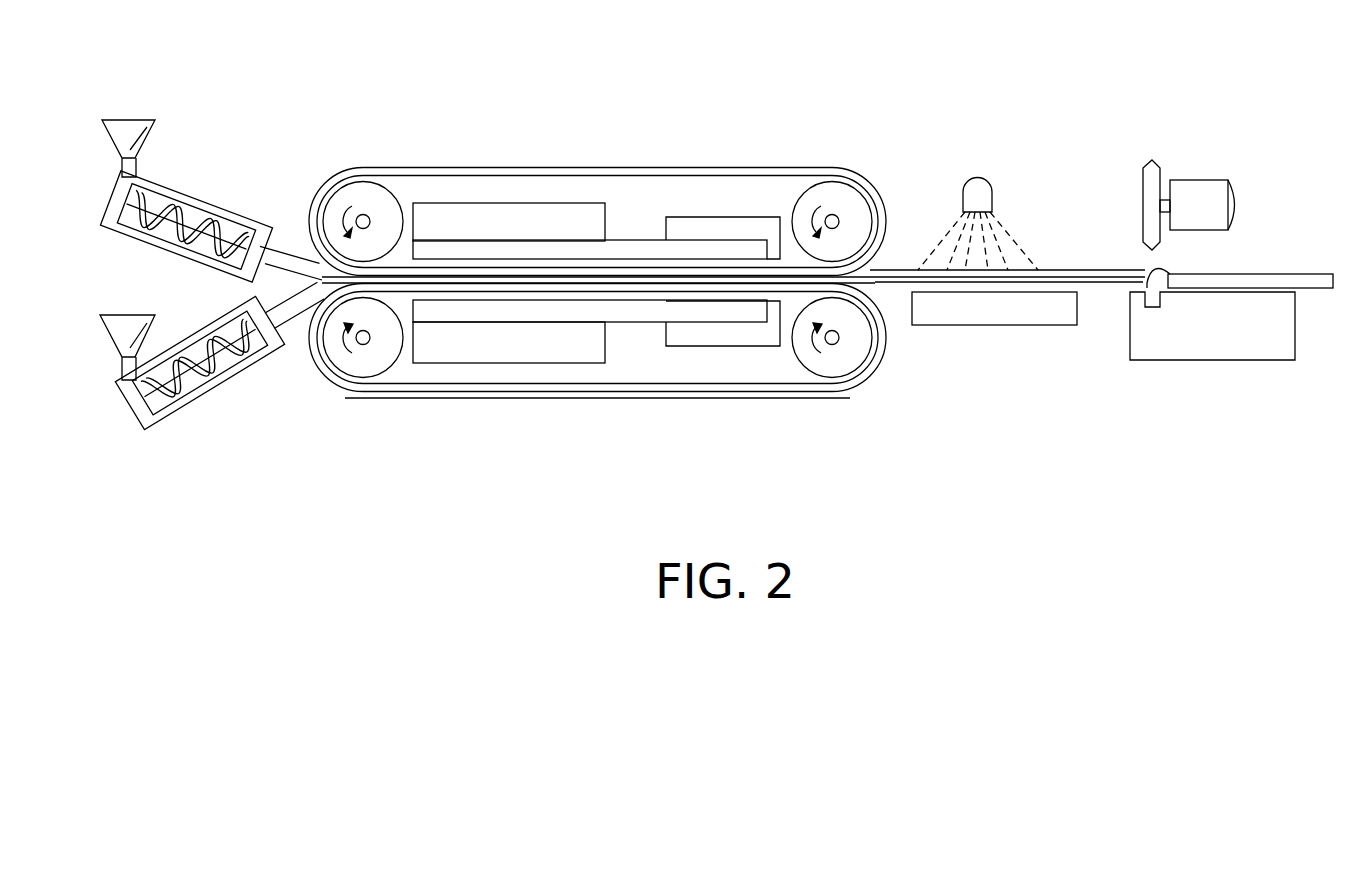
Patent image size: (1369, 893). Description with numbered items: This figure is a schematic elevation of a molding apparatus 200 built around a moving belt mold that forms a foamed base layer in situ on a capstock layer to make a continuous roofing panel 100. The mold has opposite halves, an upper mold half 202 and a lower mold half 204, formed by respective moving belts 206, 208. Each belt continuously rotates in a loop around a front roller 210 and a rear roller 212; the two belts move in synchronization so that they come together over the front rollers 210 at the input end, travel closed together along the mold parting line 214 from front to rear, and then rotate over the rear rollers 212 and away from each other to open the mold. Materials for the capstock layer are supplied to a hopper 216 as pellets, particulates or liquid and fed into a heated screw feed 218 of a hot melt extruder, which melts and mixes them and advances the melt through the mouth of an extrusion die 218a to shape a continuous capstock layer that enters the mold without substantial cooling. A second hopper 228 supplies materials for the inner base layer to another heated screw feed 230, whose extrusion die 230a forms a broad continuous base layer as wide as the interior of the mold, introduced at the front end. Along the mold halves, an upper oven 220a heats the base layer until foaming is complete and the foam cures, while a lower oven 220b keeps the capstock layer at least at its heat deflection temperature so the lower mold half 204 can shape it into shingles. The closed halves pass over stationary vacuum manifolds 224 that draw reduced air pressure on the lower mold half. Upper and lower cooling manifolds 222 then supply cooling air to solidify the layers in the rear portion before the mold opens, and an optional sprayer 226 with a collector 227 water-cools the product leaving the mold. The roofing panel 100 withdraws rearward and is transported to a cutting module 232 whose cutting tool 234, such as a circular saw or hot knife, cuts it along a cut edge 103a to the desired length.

The roofing panel 100 is at (1084, 262).
The cut edge 103a is at (1148, 282).
The apparatus 200 is at (606, 297).
The upper mold half 202 is at (597, 188).
The lower mold half 204 is at (597, 400).
The moving belt 206 is at (512, 176).
The moving belt 208 is at (580, 396).
The front roller 210 is at (358, 200).
The rear roller 212 is at (838, 200).
The mold parting line 214 is at (408, 285).
The hopper 216 is at (118, 315).
The heated screw feed 218 is at (185, 340).
The extrusion die 218a is at (300, 326).
The upper oven 220a is at (509, 222).
The lower oven 220b is at (509, 342).
The cooling manifold 222 is at (737, 230).
The vacuum manifold 224 is at (755, 312).
The sprayer 226 is at (982, 190).
The collector 227 is at (993, 308).
The hopper 228 is at (127, 120).
The heated screw feed 230 is at (197, 203).
The extrusion die 230a is at (288, 260).
The cutting module 232 is at (1210, 346).
The cutting tool 234 is at (1202, 188).